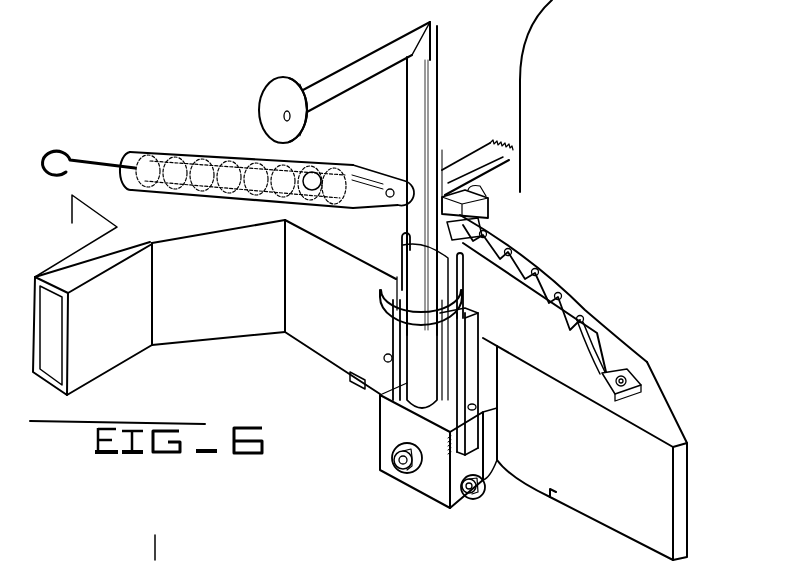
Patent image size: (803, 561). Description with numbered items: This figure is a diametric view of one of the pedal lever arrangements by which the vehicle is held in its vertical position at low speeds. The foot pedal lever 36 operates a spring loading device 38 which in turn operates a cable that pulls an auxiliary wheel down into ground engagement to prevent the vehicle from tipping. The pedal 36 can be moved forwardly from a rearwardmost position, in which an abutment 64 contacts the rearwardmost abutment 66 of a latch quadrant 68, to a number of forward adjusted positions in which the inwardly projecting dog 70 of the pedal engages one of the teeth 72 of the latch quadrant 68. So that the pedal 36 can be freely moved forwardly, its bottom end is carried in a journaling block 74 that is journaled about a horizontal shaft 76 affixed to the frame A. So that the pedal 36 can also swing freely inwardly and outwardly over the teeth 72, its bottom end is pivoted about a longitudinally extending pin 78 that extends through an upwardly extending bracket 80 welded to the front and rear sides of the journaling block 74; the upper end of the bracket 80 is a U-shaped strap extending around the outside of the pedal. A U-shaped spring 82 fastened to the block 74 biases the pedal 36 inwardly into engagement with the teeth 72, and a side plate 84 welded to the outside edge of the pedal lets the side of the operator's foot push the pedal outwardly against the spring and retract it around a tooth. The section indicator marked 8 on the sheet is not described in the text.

The foot pedal lever 36 is at (389, 52).
The spring loading device 38 is at (208, 152).
The abutment 64 is at (490, 195).
The rearwardmost abutment 66 is at (500, 163).
The latch quadrant 68 is at (598, 338).
The inwardly projecting dog 70 is at (452, 222).
The teeth 72 is at (551, 284).
The journaling block 74 is at (390, 428).
The horizontal shaft 76 is at (393, 470).
The longitudinally extending pin 78 is at (384, 360).
The bracket 80 is at (480, 374).
The U-shaped spring 82 is at (400, 258).
The side plate 84 is at (289, 78).
The frame A is at (688, 491).
The section line for FIG. 8 is at (172, 547).